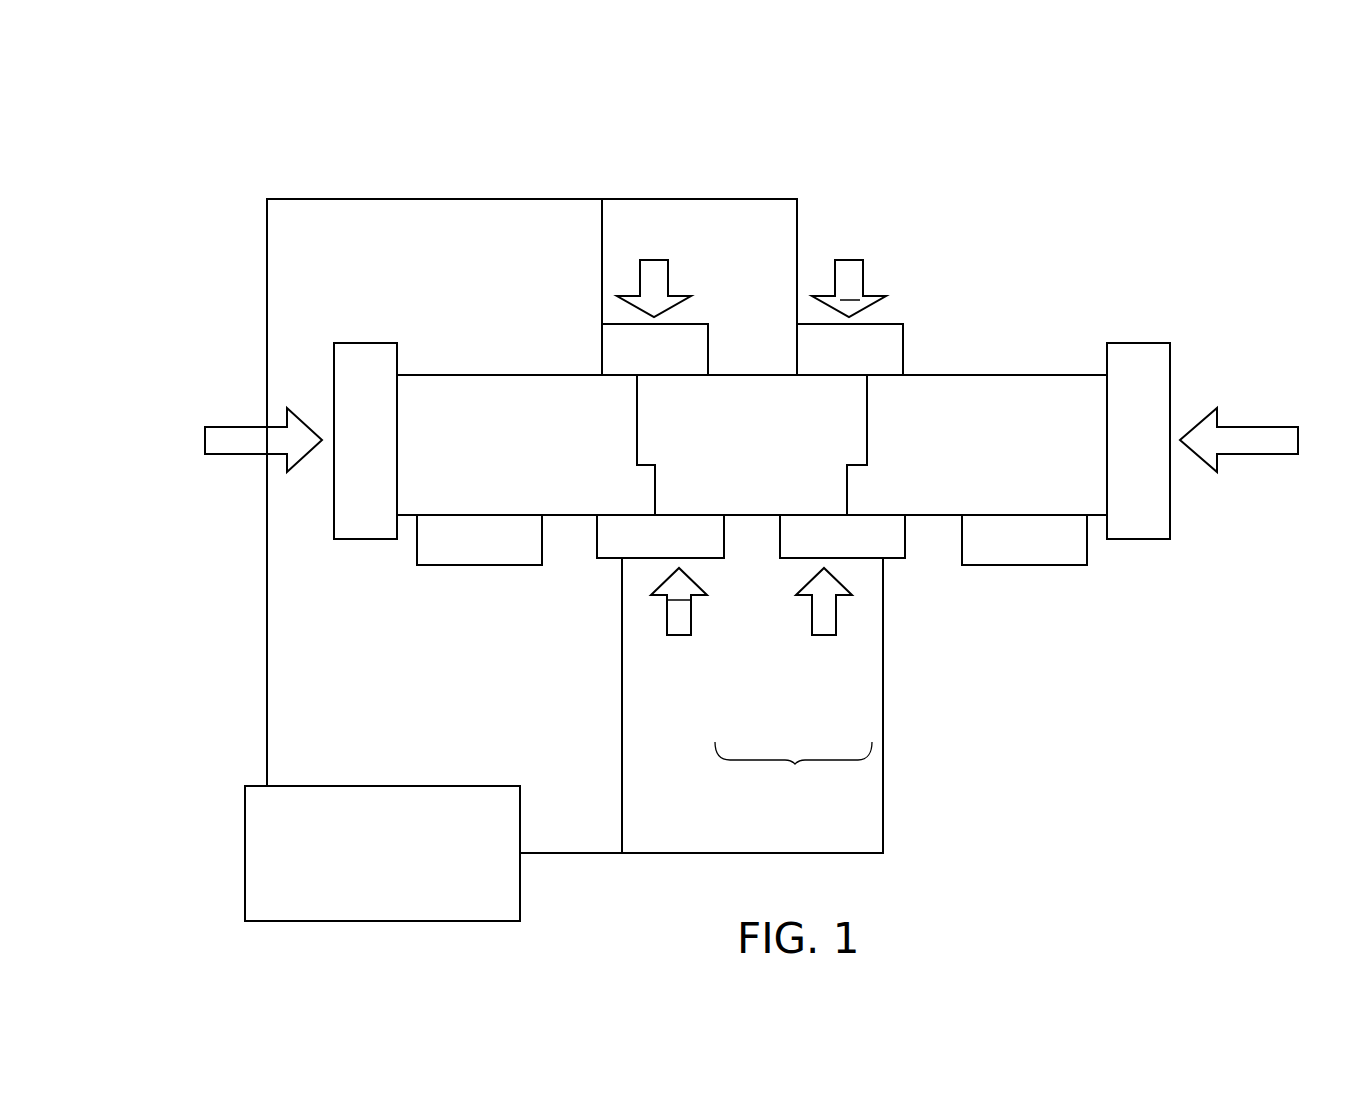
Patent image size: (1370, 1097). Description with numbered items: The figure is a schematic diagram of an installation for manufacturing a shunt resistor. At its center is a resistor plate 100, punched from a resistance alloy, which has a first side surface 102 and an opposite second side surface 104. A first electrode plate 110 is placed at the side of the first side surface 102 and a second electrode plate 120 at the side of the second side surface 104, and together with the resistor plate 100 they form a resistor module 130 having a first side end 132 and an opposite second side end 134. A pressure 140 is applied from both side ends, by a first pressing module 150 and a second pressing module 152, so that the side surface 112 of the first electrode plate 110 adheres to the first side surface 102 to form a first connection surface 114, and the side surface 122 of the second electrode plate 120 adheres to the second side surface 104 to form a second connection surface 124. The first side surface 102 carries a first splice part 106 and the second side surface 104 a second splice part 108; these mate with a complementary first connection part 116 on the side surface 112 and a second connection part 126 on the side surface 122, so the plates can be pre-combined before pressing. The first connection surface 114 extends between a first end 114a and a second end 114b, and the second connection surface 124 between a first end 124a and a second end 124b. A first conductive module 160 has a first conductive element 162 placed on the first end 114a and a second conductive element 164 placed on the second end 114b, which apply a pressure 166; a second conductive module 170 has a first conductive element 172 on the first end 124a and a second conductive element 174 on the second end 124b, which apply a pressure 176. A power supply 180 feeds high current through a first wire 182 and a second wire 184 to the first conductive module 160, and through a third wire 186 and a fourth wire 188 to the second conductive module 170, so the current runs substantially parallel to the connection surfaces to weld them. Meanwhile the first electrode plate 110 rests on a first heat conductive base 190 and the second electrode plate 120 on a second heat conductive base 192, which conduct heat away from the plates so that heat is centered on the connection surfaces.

The resistor plate 100 is at (787, 487).
The first side surface 102 is at (660, 480).
The second side surface 104 is at (845, 488).
The first splice part 106 is at (634, 418).
The second splice part 108 is at (853, 443).
The first electrode plate 110 is at (643, 500).
The side surface of the first electrode plate 112 is at (648, 500).
The first connection surface 114 is at (655, 482).
The first end of the first connection surface 114a is at (649, 373).
The second end of the first connection surface 114b is at (656, 517).
The first connection part 116 is at (650, 443).
The second electrode plate 120 is at (823, 637).
The side surface of the second electrode plate 122 is at (890, 538).
The second connection surface 124 is at (862, 470).
The first end of the second connection surface 124a is at (858, 373).
The second end of the second connection surface 124b is at (845, 592).
The second connection part 126 is at (869, 420).
The resistor module 130 is at (793, 772).
The first side end 132 is at (399, 414).
The second side end 134 is at (1105, 403).
The pressure 140 is at (232, 457).
The first pressing module 150 is at (364, 343).
The second pressing module 152 is at (1140, 343).
The first conductive module 160 is at (653, 257).
The first conductive element of the first conductive module 162 is at (612, 333).
The second conductive element of the first conductive module 164 is at (708, 540).
The pressure 166 is at (704, 318).
The second conductive module 170 is at (905, 312).
The first conductive element of the second conductive module 172 is at (892, 332).
The second conductive element of the second conductive module 174 is at (850, 503).
The pressure 176 is at (848, 260).
The power supply 180 is at (403, 885).
The first wire 182 is at (267, 648).
The second wire 184 is at (570, 855).
The third wire 186 is at (672, 199).
The fourth wire 188 is at (850, 853).
The first heat conductive base 190 is at (468, 552).
The second heat conductive base 192 is at (1022, 550).